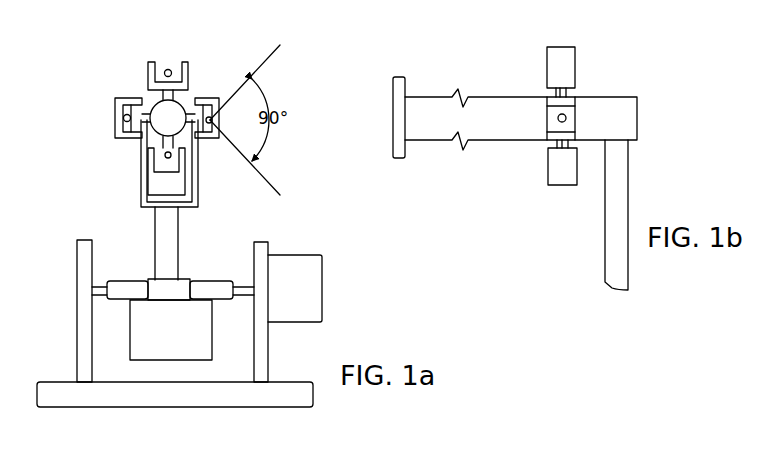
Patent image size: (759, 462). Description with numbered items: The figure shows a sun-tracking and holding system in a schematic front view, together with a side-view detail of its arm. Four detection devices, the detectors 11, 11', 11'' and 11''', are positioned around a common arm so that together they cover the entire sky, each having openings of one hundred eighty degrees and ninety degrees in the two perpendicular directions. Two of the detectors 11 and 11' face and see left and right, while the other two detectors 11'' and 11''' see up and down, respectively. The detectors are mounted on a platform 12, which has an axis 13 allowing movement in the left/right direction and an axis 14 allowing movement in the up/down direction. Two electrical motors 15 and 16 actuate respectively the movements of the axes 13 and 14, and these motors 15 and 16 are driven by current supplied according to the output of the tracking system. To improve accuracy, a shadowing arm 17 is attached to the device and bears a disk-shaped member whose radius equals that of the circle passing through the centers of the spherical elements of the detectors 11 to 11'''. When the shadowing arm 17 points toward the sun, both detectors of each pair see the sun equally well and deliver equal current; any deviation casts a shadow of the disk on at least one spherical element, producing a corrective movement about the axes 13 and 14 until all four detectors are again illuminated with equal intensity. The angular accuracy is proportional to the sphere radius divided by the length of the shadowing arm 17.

In FIG. 1A, the detector 11 is at (118, 96).
In FIG. 1B, the detector 11 is at (541, 141).
In FIG. 1A, the detector 11' is at (214, 145).
In FIG. 1A, the detector 11'' is at (150, 62).
In FIG. 1B, the detector 11'' is at (575, 48).
In FIG. 1A, the detector 11''' is at (141, 172).
In FIG. 1B, the detector 11''' is at (558, 183).
In FIG. 1A, the platform 12 is at (260, 337).
In FIG. 1A, the axis 13 is at (170, 222).
In FIG. 1B, the axis 13 is at (615, 227).
In FIG. 1A, the axis 14 is at (130, 288).
In FIG. 1A, the electrical motor 15 is at (193, 322).
In FIG. 1A, the electrical motor 16 is at (308, 277).
In FIG. 1A, the shadowing arm 17 is at (178, 110).
In FIG. 1B, the shadowing arm 17 is at (423, 108).